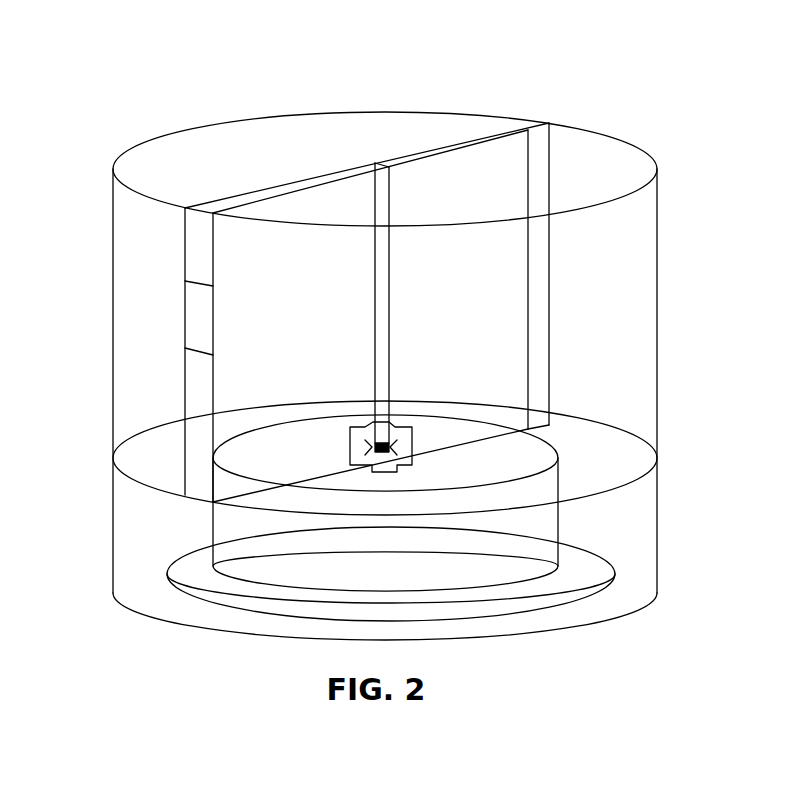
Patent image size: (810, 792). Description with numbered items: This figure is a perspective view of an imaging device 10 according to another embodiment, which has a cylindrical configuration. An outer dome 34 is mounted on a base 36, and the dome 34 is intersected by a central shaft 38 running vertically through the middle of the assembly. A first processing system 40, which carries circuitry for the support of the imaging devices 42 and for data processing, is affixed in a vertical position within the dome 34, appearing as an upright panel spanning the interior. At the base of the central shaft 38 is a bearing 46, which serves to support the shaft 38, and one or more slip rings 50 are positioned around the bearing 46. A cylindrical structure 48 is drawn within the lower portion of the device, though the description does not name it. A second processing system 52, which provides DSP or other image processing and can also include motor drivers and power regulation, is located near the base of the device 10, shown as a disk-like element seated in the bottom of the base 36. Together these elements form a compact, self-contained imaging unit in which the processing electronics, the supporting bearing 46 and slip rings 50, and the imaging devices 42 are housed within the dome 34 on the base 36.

The imaging device 10 is at (668, 115).
The outer dome 34 is at (659, 376).
The base 36 is at (646, 604).
The central shaft 38 is at (375, 212).
The first processing system 40 is at (250, 297).
The imaging devices 42 is at (197, 391).
The bearing 46 is at (358, 448).
The inner cylinder 48 is at (545, 487).
The slip rings 50 is at (413, 428).
The second processing system 52 is at (198, 588).